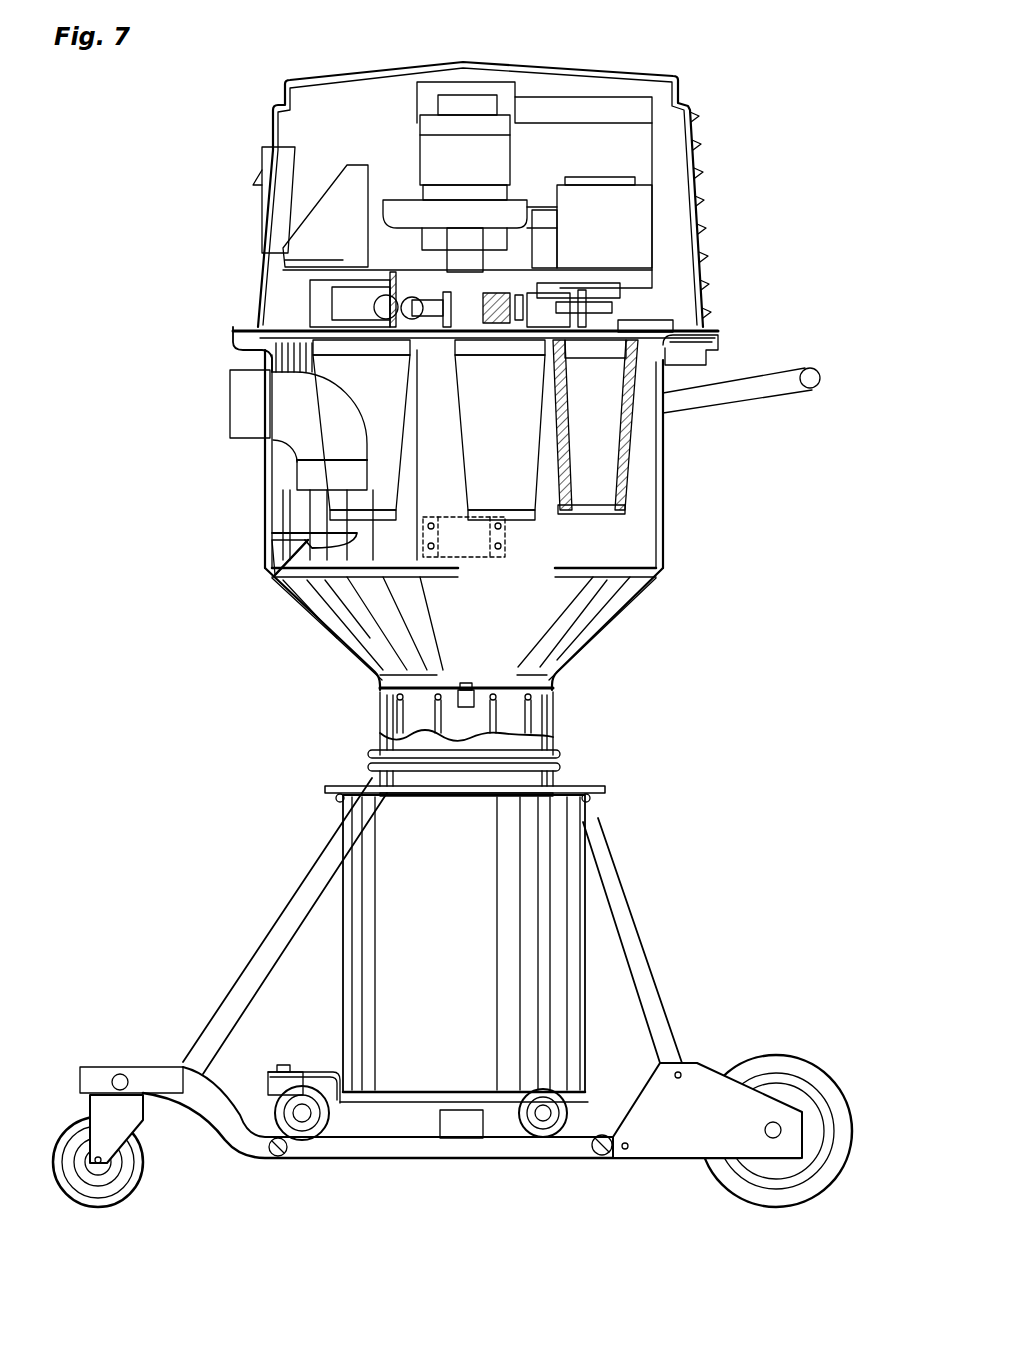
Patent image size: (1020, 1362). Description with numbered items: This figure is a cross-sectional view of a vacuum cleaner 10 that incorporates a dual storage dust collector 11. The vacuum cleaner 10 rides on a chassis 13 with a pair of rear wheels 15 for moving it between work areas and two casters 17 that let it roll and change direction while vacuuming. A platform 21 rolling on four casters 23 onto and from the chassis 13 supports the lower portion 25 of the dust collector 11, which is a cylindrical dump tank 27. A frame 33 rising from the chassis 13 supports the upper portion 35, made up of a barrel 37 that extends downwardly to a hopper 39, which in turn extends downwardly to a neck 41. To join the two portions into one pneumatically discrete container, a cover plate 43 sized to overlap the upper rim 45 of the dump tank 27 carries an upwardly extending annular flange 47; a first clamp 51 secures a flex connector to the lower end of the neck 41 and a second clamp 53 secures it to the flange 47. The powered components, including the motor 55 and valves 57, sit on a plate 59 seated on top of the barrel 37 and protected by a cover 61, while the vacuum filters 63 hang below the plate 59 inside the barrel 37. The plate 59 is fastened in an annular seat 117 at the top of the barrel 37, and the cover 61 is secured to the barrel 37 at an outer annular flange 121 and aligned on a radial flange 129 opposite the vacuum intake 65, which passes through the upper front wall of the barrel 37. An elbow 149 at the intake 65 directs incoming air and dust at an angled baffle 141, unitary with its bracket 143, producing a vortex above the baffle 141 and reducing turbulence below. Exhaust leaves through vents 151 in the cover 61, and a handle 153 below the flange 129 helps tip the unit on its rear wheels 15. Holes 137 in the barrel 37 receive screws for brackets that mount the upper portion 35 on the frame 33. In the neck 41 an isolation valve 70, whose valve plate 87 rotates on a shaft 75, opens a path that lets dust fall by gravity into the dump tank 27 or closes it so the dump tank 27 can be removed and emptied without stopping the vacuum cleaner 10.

The vacuum cleaner 10 is at (148, 168).
The dual storage dust collector 11 is at (243, 709).
The chassis 13 is at (402, 1152).
The rear wheels 15 is at (808, 1073).
The casters 17 is at (63, 1135).
The platform 21 is at (427, 1085).
The casters 23 is at (303, 1125).
The lower portion 25 is at (247, 886).
The dump tank 27 is at (345, 977).
The frame 33 is at (260, 950).
The upper portion 35 is at (232, 521).
The barrel 37 is at (665, 435).
The hopper 39 is at (620, 622).
The neck 41 is at (558, 744).
The cover plate 43 is at (330, 782).
The upper rim 45 is at (465, 795).
The annular flange 47 is at (550, 705).
The first clamp 51 is at (373, 740).
The second clamp 53 is at (365, 778).
The motor 55 is at (432, 153).
The valves 57 is at (540, 215).
The plate 59 is at (355, 335).
The cover 61 is at (378, 68).
The vacuum filters 63 is at (497, 438).
The vacuum intake 65 is at (268, 372).
The isolation valve 70 is at (347, 671).
The shaft 75 is at (472, 703).
The valve plate 87 is at (475, 687).
The annular seat 117 is at (250, 355).
The outer annular flange 121 is at (235, 343).
The radial flange 129 is at (713, 360).
The holes 137 is at (433, 527).
The baffle 141 is at (322, 550).
The bracket 143 is at (278, 555).
The elbow 149 is at (305, 432).
The vents 151 is at (703, 165).
The handle 153 is at (810, 368).